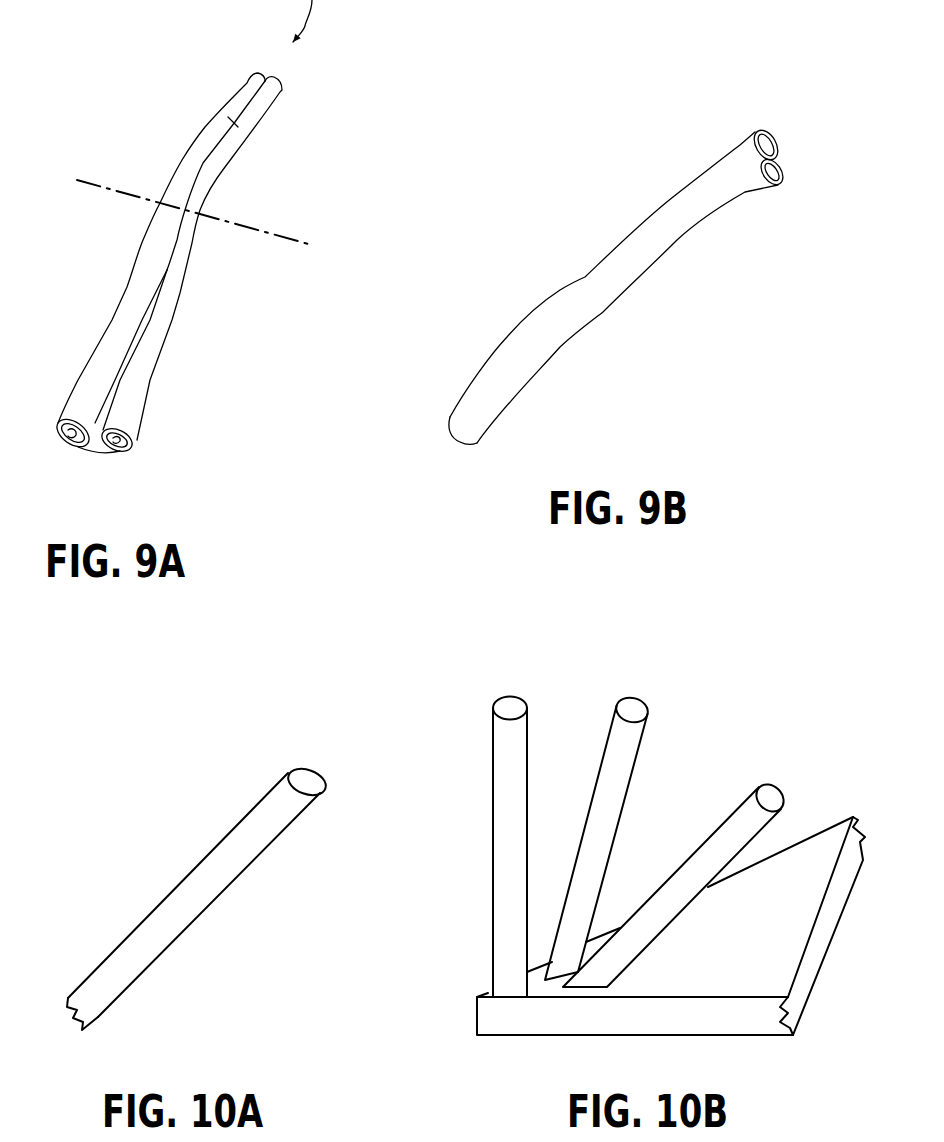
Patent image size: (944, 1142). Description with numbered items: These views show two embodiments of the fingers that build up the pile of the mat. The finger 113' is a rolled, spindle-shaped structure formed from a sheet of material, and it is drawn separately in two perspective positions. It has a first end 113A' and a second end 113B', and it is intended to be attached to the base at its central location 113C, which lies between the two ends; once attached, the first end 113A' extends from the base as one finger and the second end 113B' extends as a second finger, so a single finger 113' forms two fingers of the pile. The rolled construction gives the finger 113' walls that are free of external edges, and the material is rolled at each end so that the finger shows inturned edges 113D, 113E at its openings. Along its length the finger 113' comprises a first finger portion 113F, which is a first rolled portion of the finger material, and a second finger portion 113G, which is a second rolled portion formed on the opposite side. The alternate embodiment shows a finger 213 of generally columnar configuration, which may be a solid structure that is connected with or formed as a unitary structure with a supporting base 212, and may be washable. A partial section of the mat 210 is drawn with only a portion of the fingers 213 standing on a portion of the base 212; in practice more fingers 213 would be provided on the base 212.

In FIG. 9A, the first end 113A' is at (137, 263).
In FIG. 9A, the second end 113B' is at (209, 233).
In FIG. 9A, the central location 113C is at (110, 185).
In FIG. 9A, the inturned edge 113D is at (67, 447).
In FIG. 9B, the inturned edge 113D is at (768, 130).
In FIG. 9A, the inturned edge 113E is at (132, 445).
In FIG. 9B, the inturned edge 113E is at (783, 172).
In FIG. 9A, the first finger portion 113F is at (163, 305).
In FIG. 9A, the second finger portion 113G is at (233, 122).
In FIG. 9B, the finger 113' is at (613, 266).
In FIG. 10B, the mat 210 is at (535, 698).
In FIG. 10B, the base 212 is at (745, 1023).
In FIG. 10A, the finger 213 is at (135, 860).
In FIG. 10B, the finger 213 is at (527, 733).